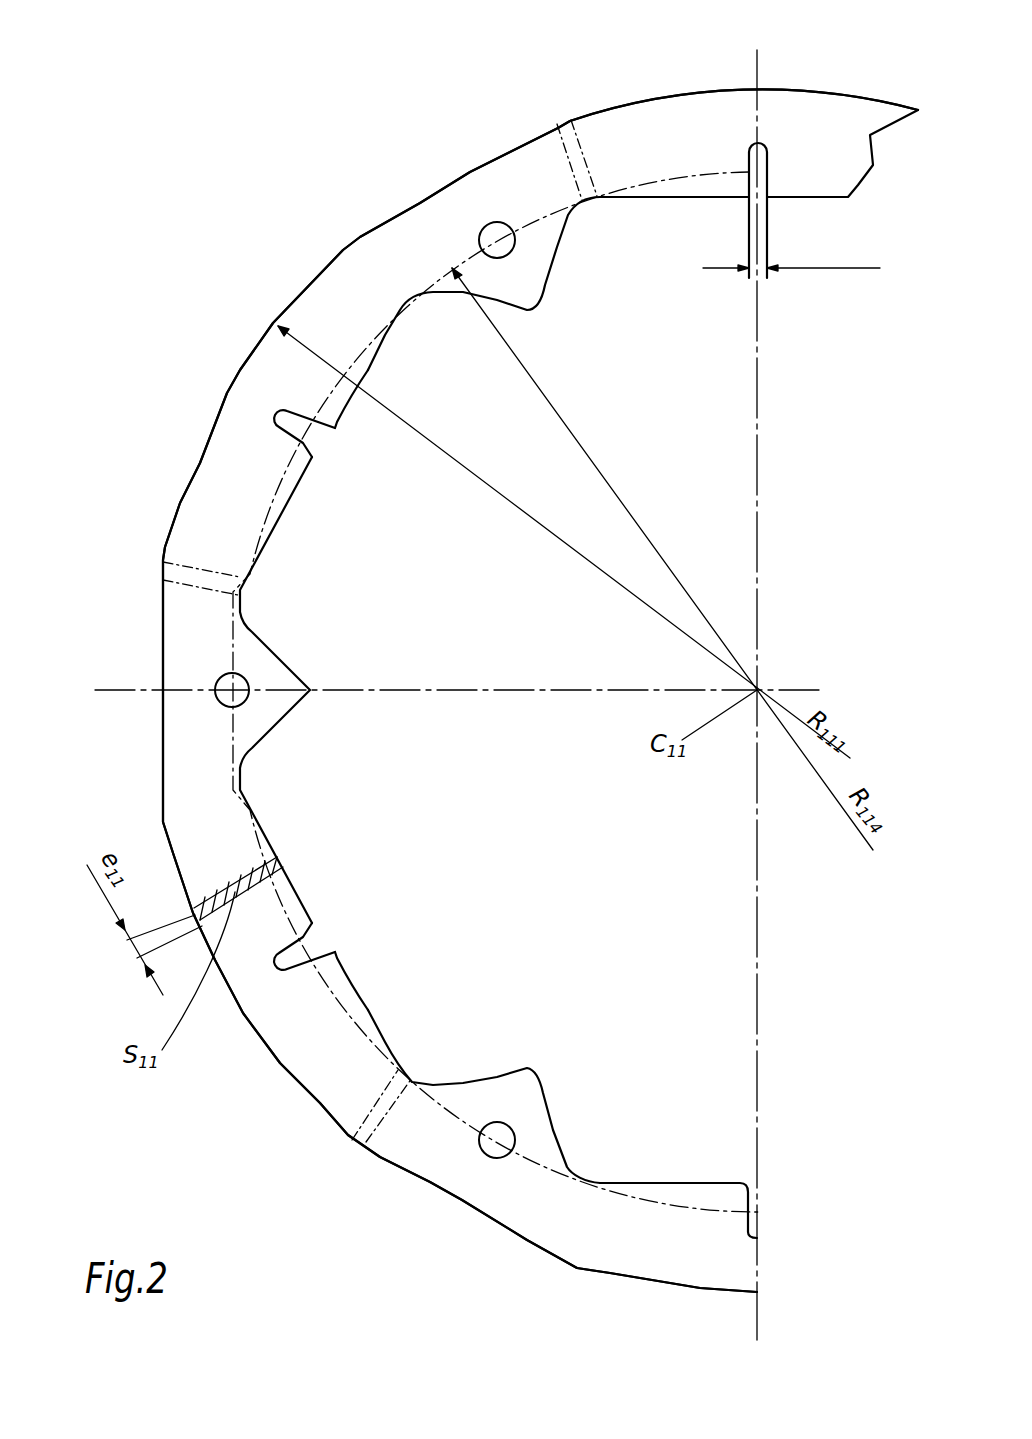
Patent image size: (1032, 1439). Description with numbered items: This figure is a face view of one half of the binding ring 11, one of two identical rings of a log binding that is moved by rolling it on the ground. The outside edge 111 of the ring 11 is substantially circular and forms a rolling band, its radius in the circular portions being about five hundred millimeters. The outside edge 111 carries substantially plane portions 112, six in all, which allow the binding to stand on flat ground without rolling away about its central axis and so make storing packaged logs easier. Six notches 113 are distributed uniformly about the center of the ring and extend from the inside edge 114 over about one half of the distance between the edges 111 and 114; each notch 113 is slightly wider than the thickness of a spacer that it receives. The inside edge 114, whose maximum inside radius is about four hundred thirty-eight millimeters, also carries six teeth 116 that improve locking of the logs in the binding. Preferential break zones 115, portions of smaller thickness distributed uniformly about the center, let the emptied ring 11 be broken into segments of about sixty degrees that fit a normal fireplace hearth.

The ring 11 is at (240, 172).
The outside edge 111 is at (660, 88).
The substantially plane portions 112 is at (456, 179).
The notches 113 is at (772, 143).
The inside edge 114 is at (283, 520).
The preferential break zones 115 is at (203, 578).
The teeth 116 is at (261, 714).